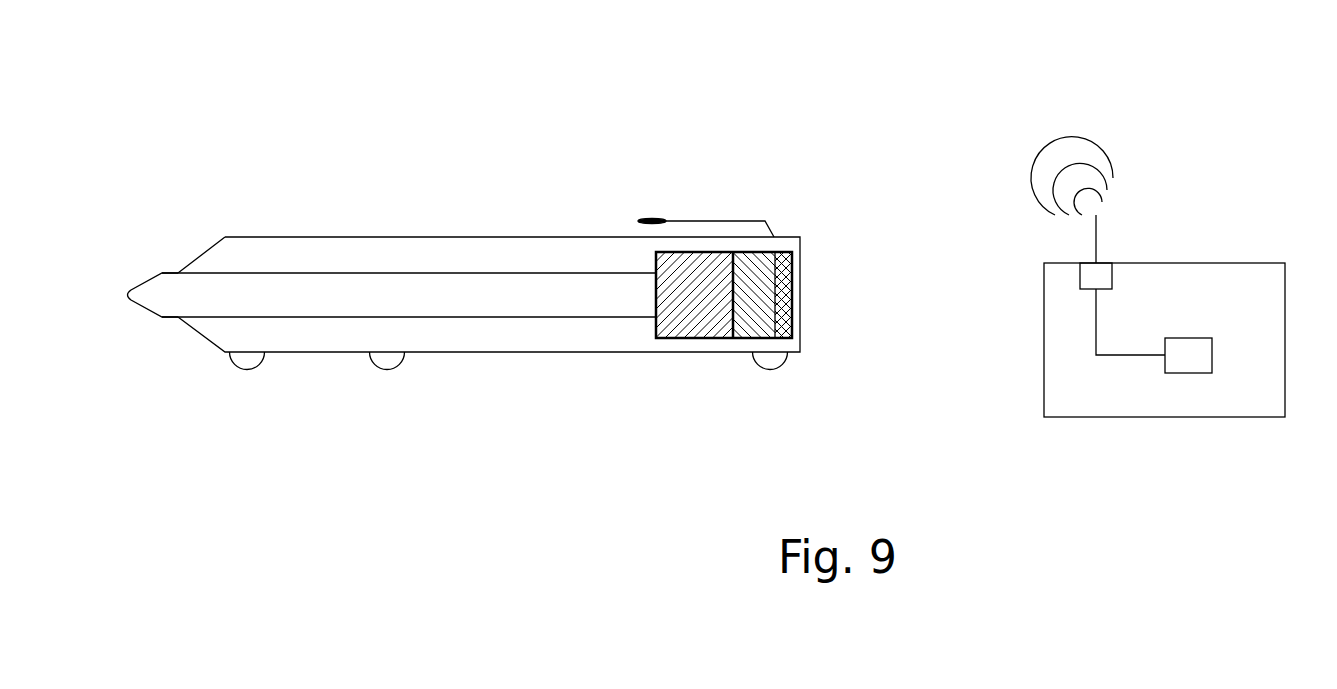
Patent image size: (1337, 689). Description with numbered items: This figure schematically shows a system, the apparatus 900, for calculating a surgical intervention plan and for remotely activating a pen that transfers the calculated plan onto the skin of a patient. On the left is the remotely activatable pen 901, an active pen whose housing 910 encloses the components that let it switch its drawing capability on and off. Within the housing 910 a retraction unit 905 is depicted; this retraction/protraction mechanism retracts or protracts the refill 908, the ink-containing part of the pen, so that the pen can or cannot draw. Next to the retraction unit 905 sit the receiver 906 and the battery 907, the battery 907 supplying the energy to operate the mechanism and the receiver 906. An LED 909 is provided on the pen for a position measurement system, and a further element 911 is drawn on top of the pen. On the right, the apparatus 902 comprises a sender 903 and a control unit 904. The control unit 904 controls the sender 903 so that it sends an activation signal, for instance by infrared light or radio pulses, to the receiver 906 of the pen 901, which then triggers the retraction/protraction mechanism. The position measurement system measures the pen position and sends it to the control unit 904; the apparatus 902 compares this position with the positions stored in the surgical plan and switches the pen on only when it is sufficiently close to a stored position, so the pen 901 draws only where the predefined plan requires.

The apparatus 900 is at (844, 90).
The remotely activatable pen 901 is at (498, 156).
The apparatus 902 is at (1252, 186).
The sender 903 is at (1097, 235).
The control unit 904 is at (1188, 374).
The retraction unit 905 is at (712, 315).
The receiver 906 is at (767, 310).
The battery 907 is at (790, 260).
The refill 908 is at (495, 317).
The LED 909 is at (255, 370).
The housing 910 is at (323, 237).
The sensor 911 is at (651, 218).